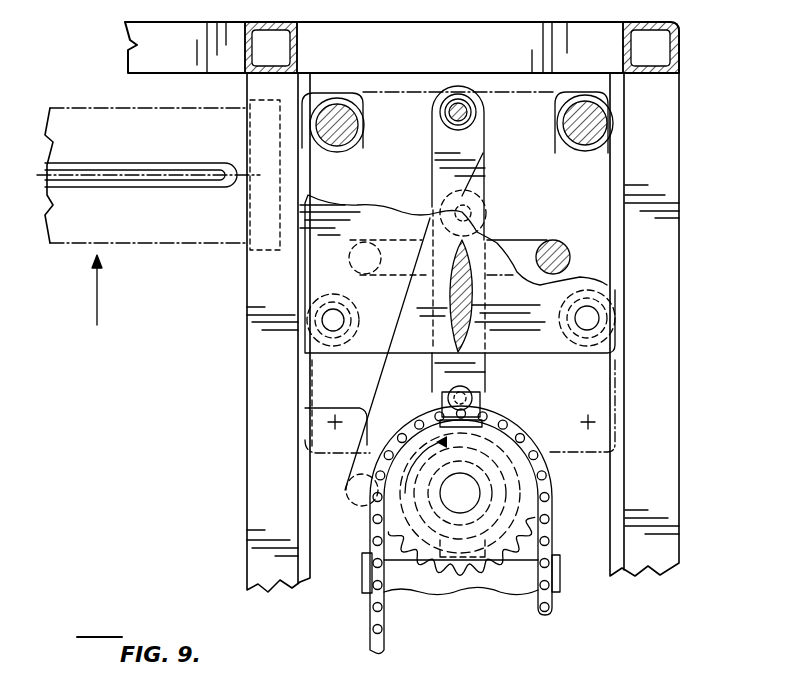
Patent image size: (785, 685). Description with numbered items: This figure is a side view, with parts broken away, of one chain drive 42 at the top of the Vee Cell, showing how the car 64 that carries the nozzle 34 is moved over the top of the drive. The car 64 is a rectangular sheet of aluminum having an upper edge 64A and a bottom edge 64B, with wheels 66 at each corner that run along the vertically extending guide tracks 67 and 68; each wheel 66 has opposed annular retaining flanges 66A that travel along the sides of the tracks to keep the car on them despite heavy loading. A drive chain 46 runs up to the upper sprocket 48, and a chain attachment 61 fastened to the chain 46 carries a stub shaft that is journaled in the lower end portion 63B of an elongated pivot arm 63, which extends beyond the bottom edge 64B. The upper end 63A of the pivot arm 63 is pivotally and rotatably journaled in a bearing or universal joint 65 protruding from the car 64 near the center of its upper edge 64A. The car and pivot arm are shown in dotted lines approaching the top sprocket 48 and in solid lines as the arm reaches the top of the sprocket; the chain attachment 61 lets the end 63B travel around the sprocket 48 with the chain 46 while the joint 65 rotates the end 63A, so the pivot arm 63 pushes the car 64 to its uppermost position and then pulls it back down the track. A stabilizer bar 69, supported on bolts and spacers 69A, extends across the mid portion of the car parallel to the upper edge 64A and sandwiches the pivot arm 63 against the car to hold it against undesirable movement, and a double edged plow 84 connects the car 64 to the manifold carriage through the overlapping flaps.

The nozzle 34 is at (127, 232).
The chain drive 42 is at (584, 589).
The drive chain 46 is at (400, 617).
The upper sprocket 48 is at (513, 552).
The chain attachment 61 is at (474, 395).
The pivot arm 63 is at (431, 140).
The end of the pivot arm 63A is at (465, 90).
The end portion of the pivot arm 63B is at (487, 413).
The car 64 is at (305, 293).
The upper edge of the car 64A is at (398, 92).
The bottom edge of the car 64B is at (347, 355).
The bearing or universal joint 65 is at (470, 123).
The wheel 66 is at (338, 99).
The retaining flange 66A is at (340, 152).
The guide track 67 is at (605, 512).
The guide track 68 is at (318, 516).
The stabilizer bar 69 is at (520, 239).
The bolts and spacers 69A is at (570, 257).
The plow 84 is at (474, 299).